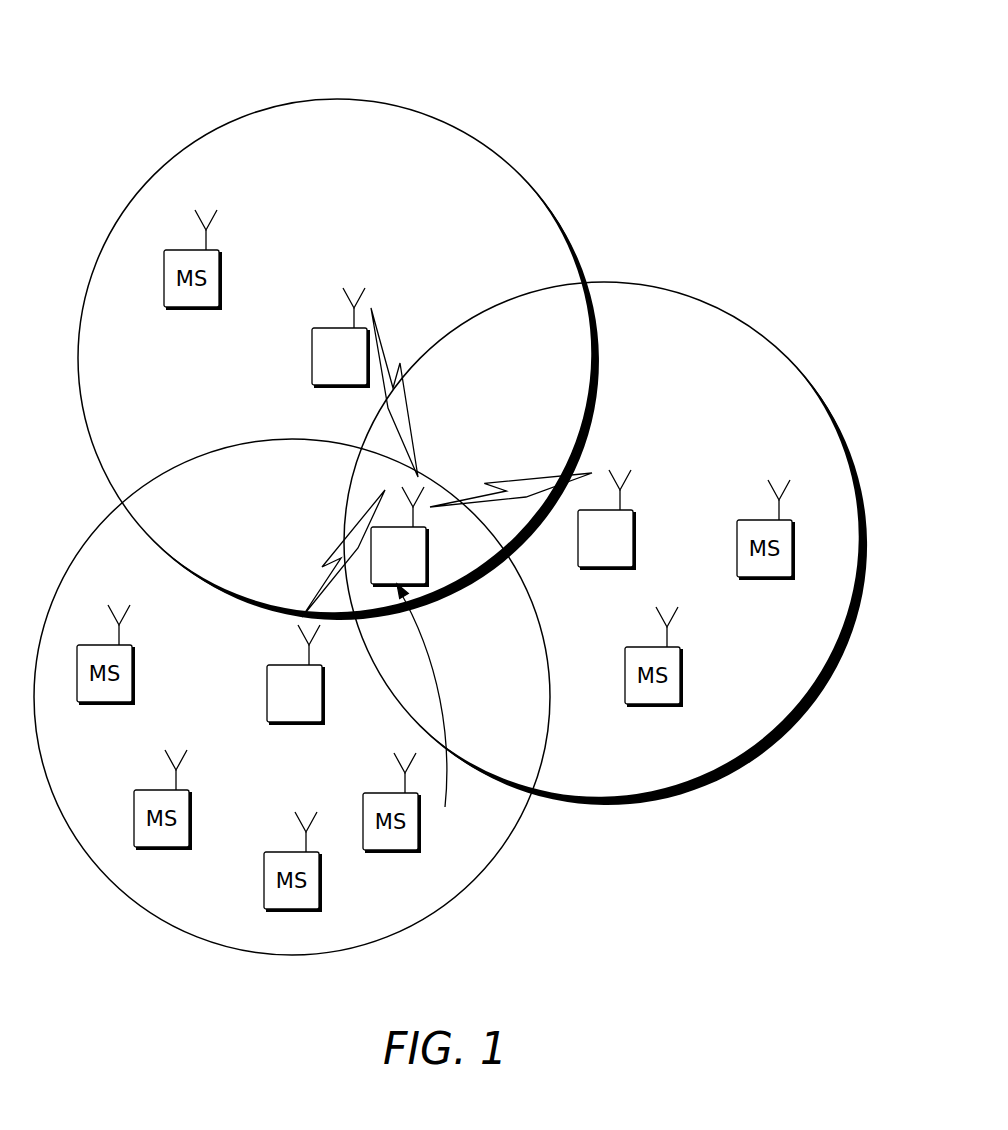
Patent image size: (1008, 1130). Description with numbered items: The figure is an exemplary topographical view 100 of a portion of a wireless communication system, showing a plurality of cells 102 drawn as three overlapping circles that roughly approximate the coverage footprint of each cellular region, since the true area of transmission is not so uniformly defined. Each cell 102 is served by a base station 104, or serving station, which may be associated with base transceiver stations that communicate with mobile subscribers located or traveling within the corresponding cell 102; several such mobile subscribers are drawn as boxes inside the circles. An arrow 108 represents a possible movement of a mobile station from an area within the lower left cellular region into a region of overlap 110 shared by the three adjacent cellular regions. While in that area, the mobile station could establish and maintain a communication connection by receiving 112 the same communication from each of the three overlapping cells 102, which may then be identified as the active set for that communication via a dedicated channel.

The topographical view 100 is at (801, 48).
The cell 102 is at (337, 99).
The base station 104 is at (312, 352).
The arrow 108 is at (448, 685).
The region of overlap 110 is at (367, 487).
The receiving 112 is at (408, 402).